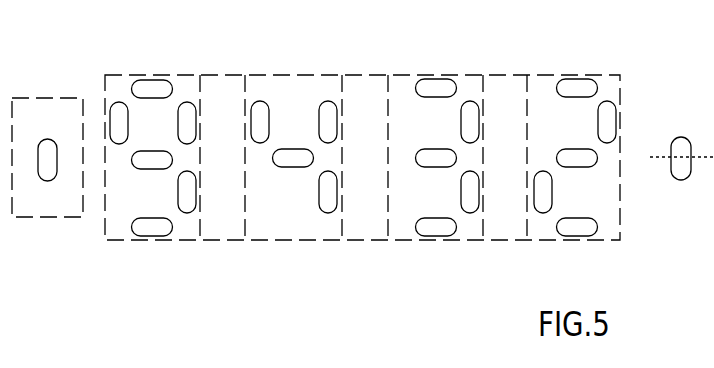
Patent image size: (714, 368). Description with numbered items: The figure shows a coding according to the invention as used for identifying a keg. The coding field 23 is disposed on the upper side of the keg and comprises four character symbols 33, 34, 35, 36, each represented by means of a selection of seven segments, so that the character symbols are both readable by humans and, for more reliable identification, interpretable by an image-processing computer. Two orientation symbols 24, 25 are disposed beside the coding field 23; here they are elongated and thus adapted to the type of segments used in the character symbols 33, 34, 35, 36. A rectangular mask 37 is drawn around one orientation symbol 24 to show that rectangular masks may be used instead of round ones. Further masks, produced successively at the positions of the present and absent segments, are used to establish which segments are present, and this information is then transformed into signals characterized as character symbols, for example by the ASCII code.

The coding field 23 is at (368, 240).
The orientation symbol 24 is at (47, 181).
The orientation symbol 25 is at (680, 138).
The character symbol 33 is at (180, 80).
The character symbol 34 is at (315, 88).
The character symbol 35 is at (466, 82).
The character symbol 36 is at (607, 85).
The rectangular mask 37 is at (24, 221).